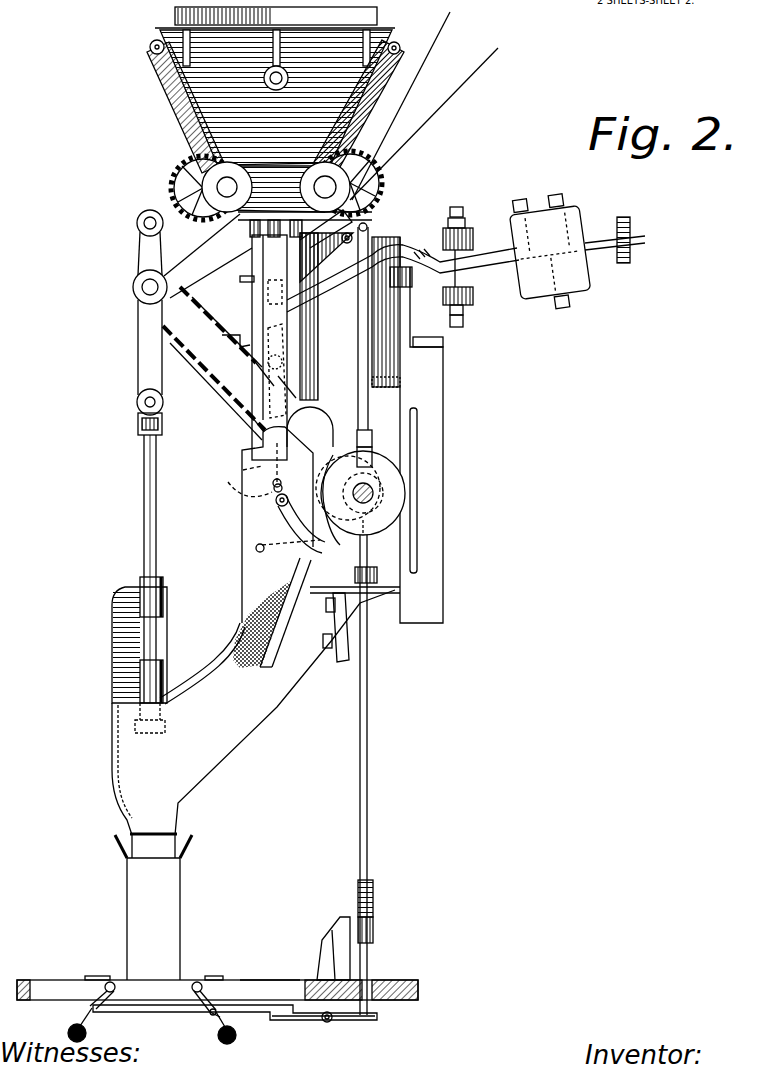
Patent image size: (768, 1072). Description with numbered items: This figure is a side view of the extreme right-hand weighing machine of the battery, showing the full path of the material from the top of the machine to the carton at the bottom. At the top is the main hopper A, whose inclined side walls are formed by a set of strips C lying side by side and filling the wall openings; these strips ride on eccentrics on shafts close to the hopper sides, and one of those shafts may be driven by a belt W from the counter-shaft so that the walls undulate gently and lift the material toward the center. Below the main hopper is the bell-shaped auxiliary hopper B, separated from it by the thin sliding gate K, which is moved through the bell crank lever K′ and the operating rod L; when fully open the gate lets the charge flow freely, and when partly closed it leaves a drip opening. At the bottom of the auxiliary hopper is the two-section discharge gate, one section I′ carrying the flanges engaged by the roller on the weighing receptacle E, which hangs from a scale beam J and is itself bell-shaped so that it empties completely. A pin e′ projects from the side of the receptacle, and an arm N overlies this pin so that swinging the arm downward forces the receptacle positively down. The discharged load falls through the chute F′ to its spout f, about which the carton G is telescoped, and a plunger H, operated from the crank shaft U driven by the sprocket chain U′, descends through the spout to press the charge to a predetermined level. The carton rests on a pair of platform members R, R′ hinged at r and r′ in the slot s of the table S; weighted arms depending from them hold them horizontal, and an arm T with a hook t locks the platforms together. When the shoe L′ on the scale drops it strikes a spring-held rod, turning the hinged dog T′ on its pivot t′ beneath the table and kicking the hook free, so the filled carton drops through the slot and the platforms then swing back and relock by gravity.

The hopper A is at (174, 14).
The strips C is at (180, 100).
The gear wheels V is at (196, 170).
The belt W is at (426, 122).
The scale beams J is at (492, 250).
The gate K is at (293, 242).
The bell crank lever K′ is at (368, 228).
The crank shaft U is at (134, 288).
The auxiliary hopper B is at (300, 308).
The sprocket chain U′ is at (238, 316).
The gate section I′ is at (247, 392).
The operating rod L is at (400, 412).
The shoe L′ is at (396, 470).
The arm N is at (294, 447).
The pin e′ is at (240, 478).
The cam disc P is at (376, 494).
The plunger H is at (142, 512).
The weighing receptacle E is at (252, 502).
The arm E′ is at (272, 643).
The chute F′ is at (238, 730).
The spout f is at (130, 822).
The carton G is at (182, 900).
The table S is at (22, 980).
The slot s is at (254, 988).
The hinge r is at (104, 982).
The platform member R is at (110, 982).
The platform member R′ is at (199, 981).
The hinge r′ is at (208, 980).
The arm T is at (172, 1010).
The hook t is at (232, 1016).
The hinged dog T′ is at (312, 1021).
The pivot t′ is at (329, 1022).